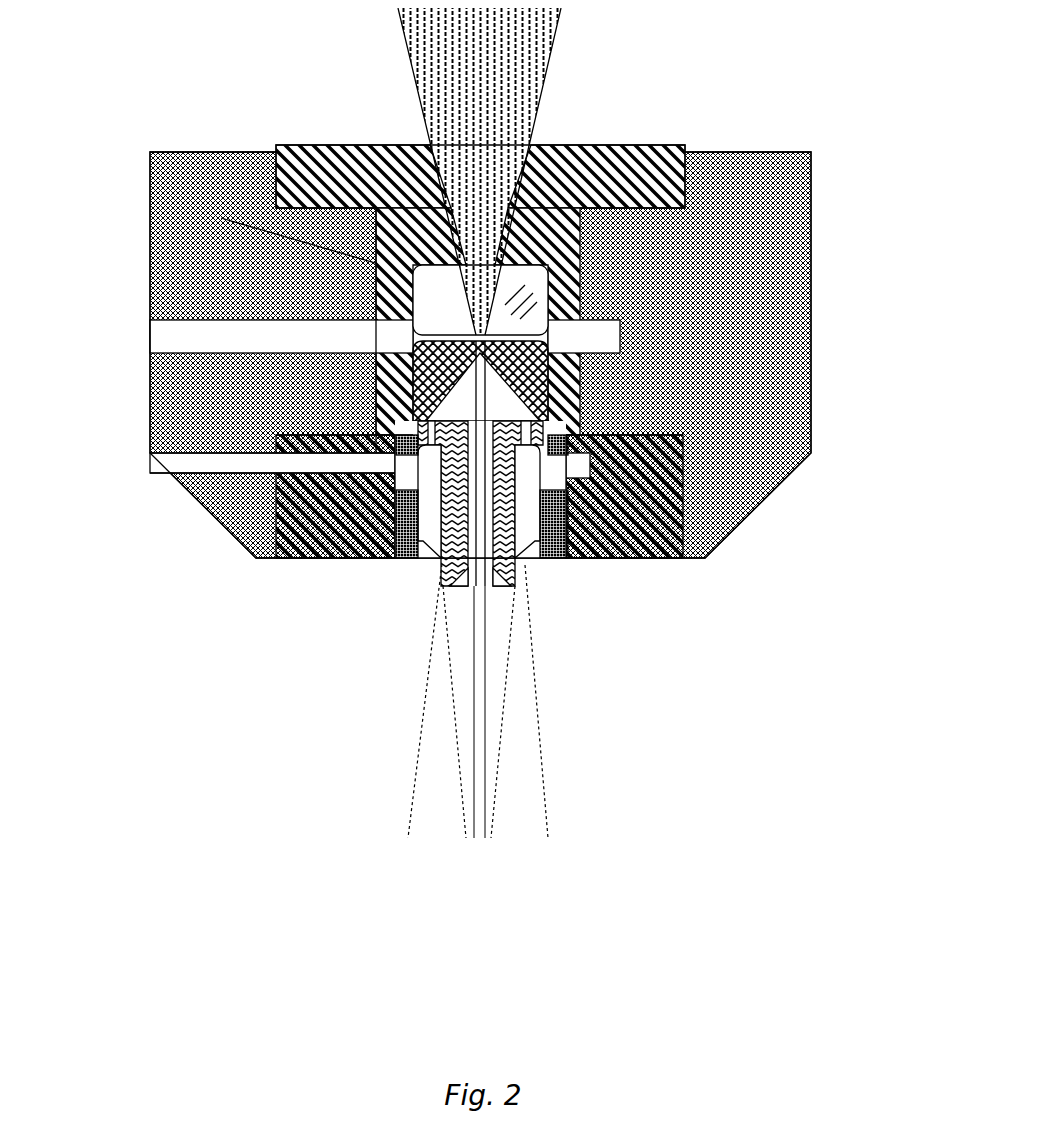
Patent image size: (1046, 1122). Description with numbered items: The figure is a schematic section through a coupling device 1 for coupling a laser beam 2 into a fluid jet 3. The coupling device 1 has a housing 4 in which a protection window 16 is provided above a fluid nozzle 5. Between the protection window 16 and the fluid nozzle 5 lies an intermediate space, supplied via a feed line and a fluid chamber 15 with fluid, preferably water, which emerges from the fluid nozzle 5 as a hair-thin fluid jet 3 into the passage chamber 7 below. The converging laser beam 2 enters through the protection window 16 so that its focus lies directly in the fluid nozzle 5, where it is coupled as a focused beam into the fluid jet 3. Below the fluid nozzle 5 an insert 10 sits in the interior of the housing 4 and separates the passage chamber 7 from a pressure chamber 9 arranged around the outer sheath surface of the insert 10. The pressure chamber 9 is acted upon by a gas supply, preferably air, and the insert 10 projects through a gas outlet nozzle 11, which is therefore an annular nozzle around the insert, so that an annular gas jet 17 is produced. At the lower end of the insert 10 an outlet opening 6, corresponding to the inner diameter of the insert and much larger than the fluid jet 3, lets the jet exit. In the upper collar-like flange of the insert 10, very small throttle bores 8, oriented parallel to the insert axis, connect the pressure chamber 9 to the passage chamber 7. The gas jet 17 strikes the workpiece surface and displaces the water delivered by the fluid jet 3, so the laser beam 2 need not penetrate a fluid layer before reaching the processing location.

The coupling device 1 is at (767, 117).
The laser beam 2 is at (142, 165).
The fluid jet 3 is at (472, 710).
The housing 4 is at (677, 200).
The fluid nozzle 5 is at (488, 400).
The outlet opening 6 is at (483, 570).
The passage chamber 7 is at (680, 440).
The throttle bores 8 is at (418, 447).
The pressure chamber 9 is at (562, 500).
The insert 10 is at (517, 553).
The gas outlet nozzle 11 is at (430, 550).
The fluid chamber 15 is at (553, 327).
The protection window 16 is at (543, 287).
The gas jet 17 is at (430, 757).